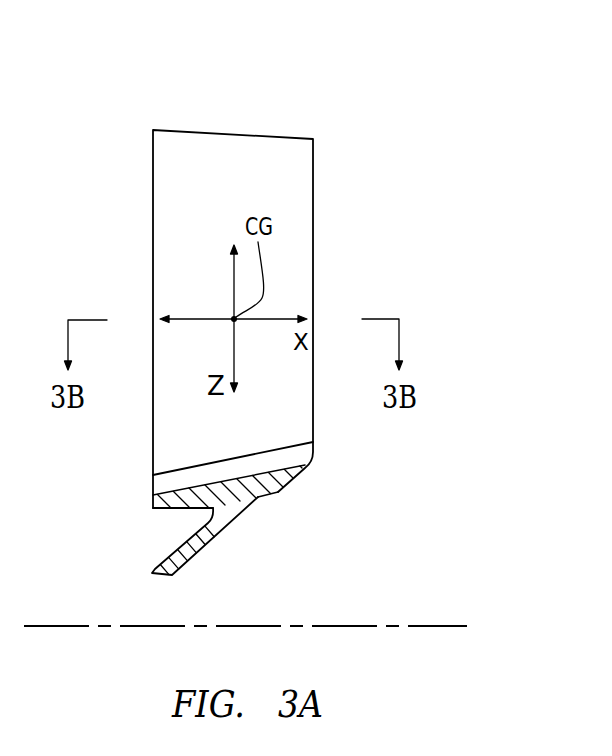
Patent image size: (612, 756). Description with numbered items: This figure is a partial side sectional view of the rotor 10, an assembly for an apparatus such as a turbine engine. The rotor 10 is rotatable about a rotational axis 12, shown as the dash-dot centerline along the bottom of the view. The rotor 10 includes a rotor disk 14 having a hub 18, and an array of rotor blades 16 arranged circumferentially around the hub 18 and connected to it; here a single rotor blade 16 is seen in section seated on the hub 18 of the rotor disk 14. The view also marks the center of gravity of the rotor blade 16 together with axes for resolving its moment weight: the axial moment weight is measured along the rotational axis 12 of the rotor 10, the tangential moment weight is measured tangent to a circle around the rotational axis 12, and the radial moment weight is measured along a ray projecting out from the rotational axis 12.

The rotor 10 is at (300, 290).
The rotational axis 12 is at (447, 624).
The rotor disk 14 is at (249, 521).
The rotor blade 16 is at (319, 160).
The hub 18 is at (278, 492).